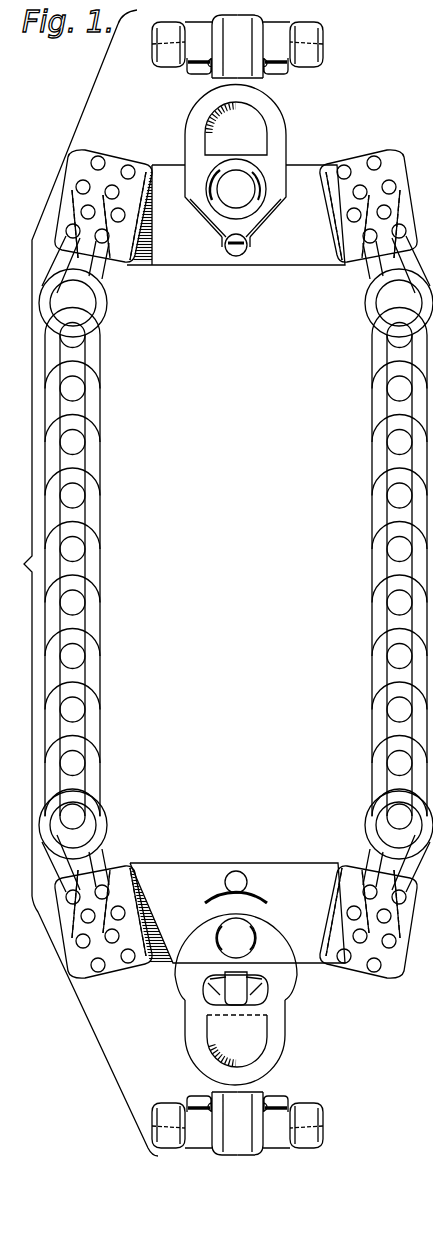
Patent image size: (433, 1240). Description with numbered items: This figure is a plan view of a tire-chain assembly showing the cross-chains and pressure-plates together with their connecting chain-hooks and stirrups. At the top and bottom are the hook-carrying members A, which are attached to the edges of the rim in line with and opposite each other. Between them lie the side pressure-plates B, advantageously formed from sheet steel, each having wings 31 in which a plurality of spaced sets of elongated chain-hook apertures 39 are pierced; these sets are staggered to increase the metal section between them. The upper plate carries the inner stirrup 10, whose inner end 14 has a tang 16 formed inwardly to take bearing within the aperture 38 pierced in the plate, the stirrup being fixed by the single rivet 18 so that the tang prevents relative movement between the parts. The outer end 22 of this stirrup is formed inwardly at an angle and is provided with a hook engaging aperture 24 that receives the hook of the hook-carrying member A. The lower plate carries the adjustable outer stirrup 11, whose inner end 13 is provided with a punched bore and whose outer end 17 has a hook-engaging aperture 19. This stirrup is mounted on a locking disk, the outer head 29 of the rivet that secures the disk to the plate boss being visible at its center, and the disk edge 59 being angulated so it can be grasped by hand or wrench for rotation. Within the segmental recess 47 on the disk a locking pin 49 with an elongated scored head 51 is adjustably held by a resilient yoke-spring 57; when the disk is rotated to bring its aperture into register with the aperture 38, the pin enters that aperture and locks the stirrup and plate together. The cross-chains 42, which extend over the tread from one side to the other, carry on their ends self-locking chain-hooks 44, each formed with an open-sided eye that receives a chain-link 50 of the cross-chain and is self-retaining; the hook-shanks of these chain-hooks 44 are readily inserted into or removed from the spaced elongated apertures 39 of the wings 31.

The hook-carrying member A is at (305, 55).
The side pressure-plate B is at (282, 240).
The inner stirrup 10 is at (198, 148).
The outer stirrup 11 is at (278, 1025).
The inner end of stirrup 13 is at (245, 900).
The inner end of stirrup 14 is at (232, 220).
The tang 16 is at (238, 253).
The outer end of stirrup 17 is at (222, 1072).
The rivet 18 is at (240, 188).
The hook-engaging aperture 19 is at (230, 1032).
The outer end of stirrup 22 is at (245, 95).
The hook engaging aperture 24 is at (238, 130).
The outer head of rivet 29 is at (238, 937).
The wing 31 is at (402, 148).
The aperture 38 is at (237, 257).
The chain-hook apertures 39 is at (398, 218).
The cross-chain 42 is at (88, 537).
The chain-hook 44 is at (105, 300).
The segmental recess 47 is at (230, 988).
The locking pin 49 is at (240, 992).
The chain-link 50 is at (93, 353).
The elongated scored head 51 is at (252, 995).
The yoke-spring 57 is at (257, 988).
The edge of locking disk 59 is at (297, 970).